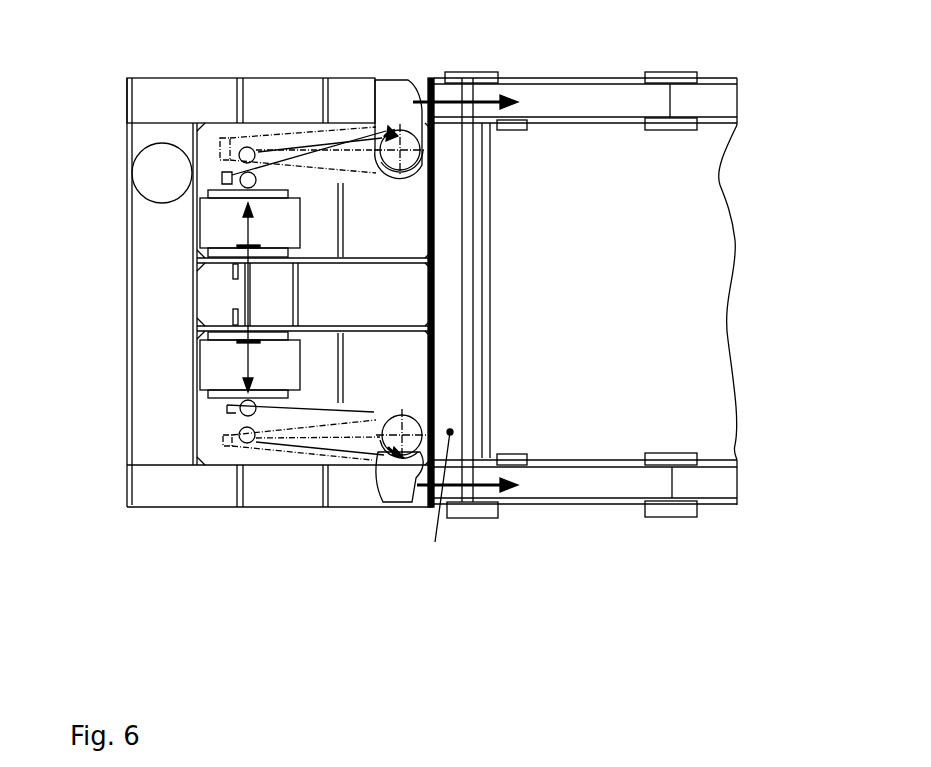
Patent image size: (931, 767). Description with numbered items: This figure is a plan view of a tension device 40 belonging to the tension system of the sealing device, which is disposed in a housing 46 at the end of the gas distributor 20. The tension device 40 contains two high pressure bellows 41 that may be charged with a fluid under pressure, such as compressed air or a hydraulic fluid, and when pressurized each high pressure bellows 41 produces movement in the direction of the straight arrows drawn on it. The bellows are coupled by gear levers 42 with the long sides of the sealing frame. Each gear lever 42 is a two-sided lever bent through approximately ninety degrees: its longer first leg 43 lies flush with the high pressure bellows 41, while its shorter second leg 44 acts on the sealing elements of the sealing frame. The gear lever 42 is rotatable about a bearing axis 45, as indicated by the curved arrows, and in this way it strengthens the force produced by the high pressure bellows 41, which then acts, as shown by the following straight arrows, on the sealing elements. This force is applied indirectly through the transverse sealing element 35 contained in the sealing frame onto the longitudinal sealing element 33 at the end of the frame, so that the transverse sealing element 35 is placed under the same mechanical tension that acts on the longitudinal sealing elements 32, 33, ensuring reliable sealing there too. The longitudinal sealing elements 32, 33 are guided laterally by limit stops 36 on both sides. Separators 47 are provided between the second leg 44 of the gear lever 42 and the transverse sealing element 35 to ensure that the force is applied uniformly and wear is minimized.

The gas distributor 20 is at (657, 303).
The longitudinal sealing element 32 is at (712, 98).
The longitudinal sealing element 33 is at (598, 102).
The transverse sealing element 35 is at (447, 140).
The limit stop 36 is at (687, 460).
The tension device 40 is at (79, 325).
The high pressure bellows 41 is at (222, 224).
The gear lever 42 is at (290, 167).
The first leg 43 is at (243, 175).
The second leg 44 is at (393, 108).
The bearing axis 45 is at (415, 160).
The housing 46 is at (128, 430).
The separator 47 is at (425, 92).